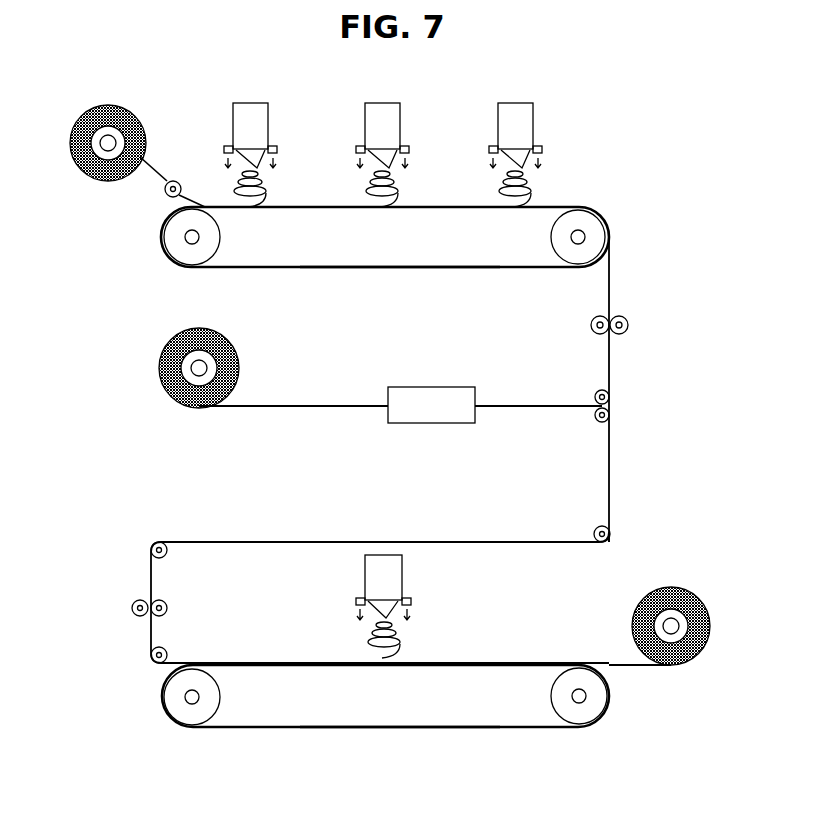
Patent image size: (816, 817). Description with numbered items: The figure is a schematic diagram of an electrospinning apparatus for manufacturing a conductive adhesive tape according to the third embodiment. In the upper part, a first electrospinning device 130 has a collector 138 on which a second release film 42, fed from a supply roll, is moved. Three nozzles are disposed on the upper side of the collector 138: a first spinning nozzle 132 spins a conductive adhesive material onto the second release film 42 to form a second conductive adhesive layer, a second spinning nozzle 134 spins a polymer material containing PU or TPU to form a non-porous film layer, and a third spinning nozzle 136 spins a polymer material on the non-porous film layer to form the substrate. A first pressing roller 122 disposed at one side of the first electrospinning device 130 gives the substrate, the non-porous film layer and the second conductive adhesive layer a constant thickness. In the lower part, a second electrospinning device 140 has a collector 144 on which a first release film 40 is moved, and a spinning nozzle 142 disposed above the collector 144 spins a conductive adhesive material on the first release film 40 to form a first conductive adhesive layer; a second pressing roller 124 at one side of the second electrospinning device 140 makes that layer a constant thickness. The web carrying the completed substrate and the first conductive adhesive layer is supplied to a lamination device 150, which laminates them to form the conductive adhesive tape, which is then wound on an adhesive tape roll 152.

The first release film 40 is at (612, 660).
The second release film 42 is at (148, 160).
The first pressing roller 122 is at (628, 332).
The second pressing roller 124 is at (168, 606).
The first electrospinning device 130 is at (583, 207).
The first spinning nozzle 132 is at (252, 124).
The second spinning nozzle 134 is at (384, 124).
The third spinning nozzle 136 is at (517, 124).
The collector 138 is at (513, 268).
The second electrospinning device 140 is at (615, 701).
The spinning nozzle 142 is at (388, 573).
The collector 144 is at (391, 730).
The lamination device 150 is at (423, 404).
The adhesive tape roll 152 is at (241, 378).